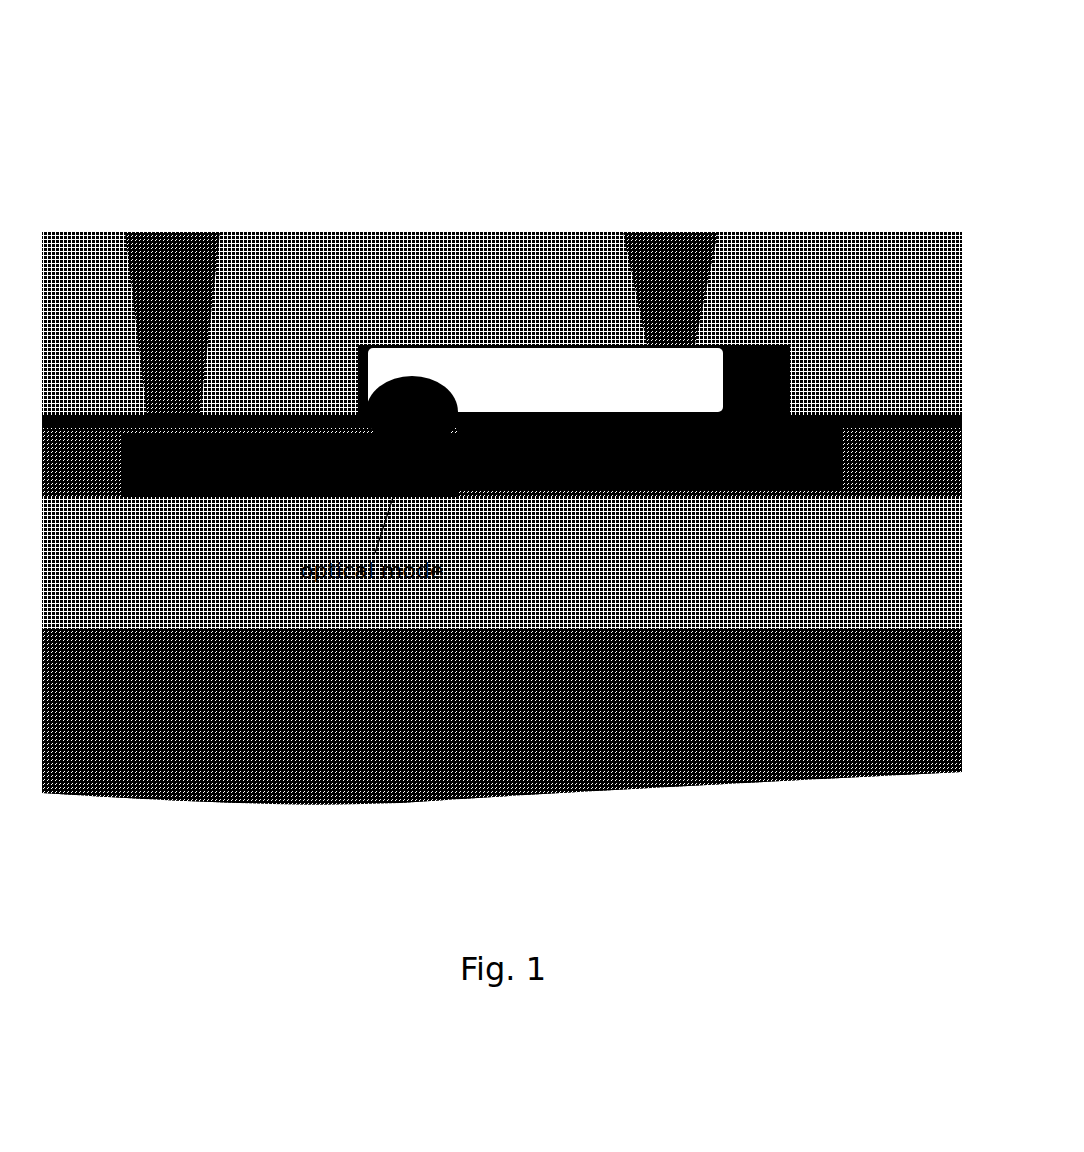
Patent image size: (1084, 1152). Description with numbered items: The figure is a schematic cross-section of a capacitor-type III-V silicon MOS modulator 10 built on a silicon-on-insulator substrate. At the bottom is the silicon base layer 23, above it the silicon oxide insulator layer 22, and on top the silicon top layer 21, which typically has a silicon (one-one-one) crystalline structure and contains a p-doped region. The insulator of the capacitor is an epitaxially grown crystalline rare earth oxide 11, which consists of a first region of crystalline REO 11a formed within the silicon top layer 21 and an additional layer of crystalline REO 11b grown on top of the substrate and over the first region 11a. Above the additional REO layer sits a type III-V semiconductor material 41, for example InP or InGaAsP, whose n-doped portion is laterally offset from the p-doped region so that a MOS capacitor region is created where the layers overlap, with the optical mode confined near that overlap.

The photonic device 10 is at (804, 59).
The epitaxially grown crystalline rare earth oxide 11 is at (502, 306).
The first region of crystalline REO 11a is at (792, 468).
The additional layer of crystalline REO 11b is at (940, 420).
The silicon top layer 21 is at (949, 499).
The silicon oxide insulator layer 22 is at (948, 620).
The silicon base layer 23 is at (948, 762).
The type III-V semiconductor material 41 is at (358, 345).